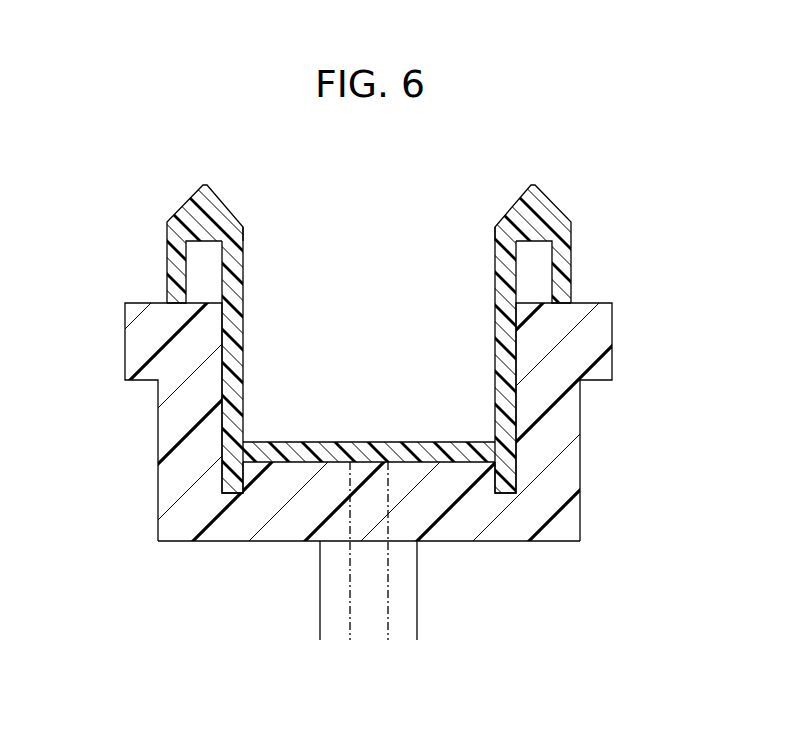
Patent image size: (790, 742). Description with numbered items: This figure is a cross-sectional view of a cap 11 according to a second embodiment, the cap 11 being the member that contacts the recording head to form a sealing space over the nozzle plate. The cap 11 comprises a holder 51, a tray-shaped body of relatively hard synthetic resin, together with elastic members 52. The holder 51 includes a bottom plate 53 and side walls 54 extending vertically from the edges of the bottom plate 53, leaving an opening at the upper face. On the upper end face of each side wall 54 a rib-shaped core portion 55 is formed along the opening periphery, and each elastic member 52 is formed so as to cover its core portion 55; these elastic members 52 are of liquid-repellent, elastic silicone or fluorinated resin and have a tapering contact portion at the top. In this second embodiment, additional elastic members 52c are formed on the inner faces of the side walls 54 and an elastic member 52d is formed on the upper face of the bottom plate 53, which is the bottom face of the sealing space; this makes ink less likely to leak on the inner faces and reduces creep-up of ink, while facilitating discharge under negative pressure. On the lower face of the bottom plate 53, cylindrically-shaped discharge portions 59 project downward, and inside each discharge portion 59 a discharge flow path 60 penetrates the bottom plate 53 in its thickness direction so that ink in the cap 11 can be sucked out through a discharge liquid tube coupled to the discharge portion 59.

The cap 11 is at (126, 493).
The holder 51 is at (395, 466).
The elastic member 52 is at (338, 210).
The elastic member 52c is at (233, 321).
The elastic member 52d is at (327, 442).
The bottom plate 53 is at (276, 531).
The side wall 54 is at (170, 425).
The core portion 55 is at (203, 267).
The discharge portion 59 is at (420, 573).
The discharge flow path 60 is at (388, 622).